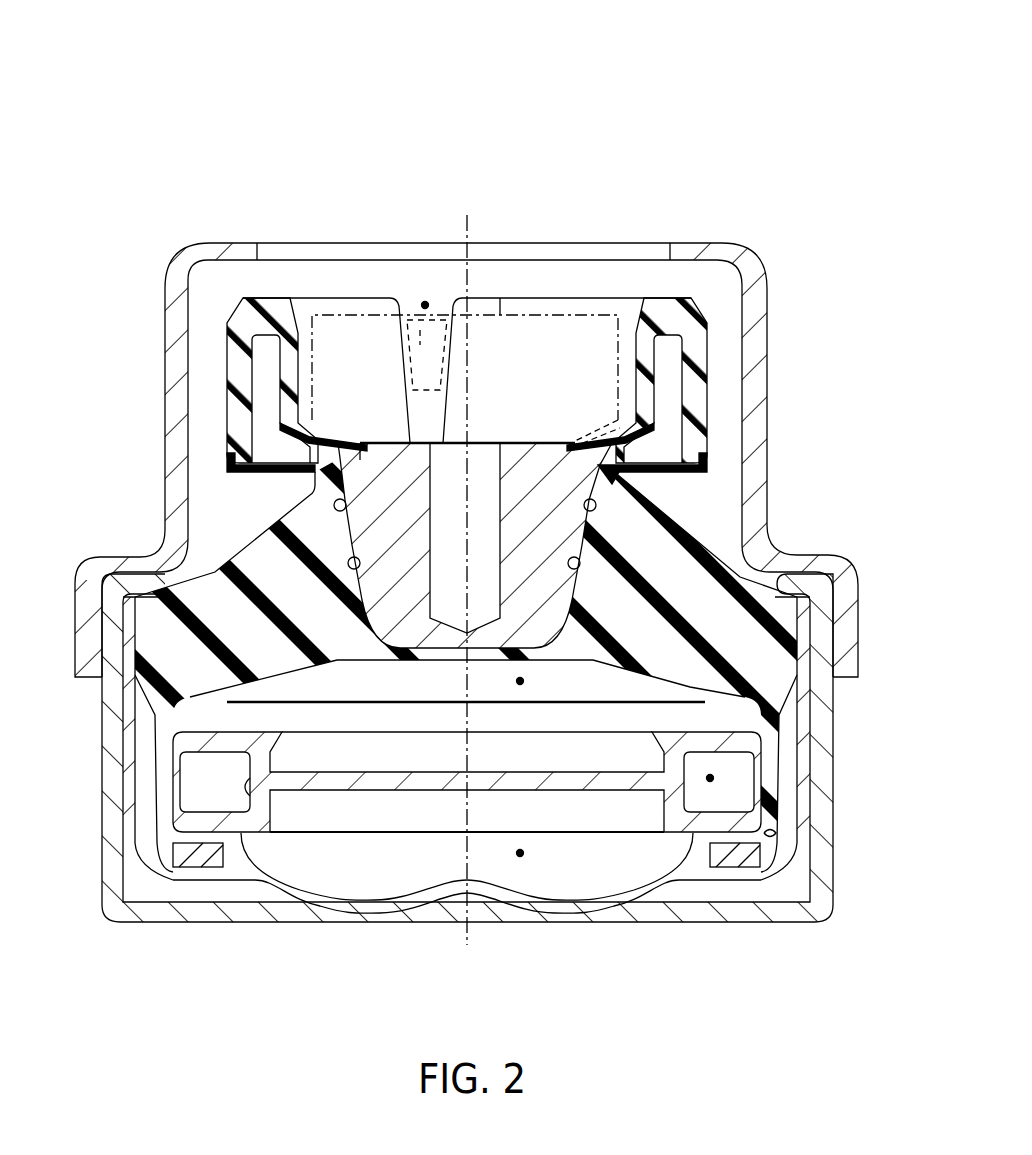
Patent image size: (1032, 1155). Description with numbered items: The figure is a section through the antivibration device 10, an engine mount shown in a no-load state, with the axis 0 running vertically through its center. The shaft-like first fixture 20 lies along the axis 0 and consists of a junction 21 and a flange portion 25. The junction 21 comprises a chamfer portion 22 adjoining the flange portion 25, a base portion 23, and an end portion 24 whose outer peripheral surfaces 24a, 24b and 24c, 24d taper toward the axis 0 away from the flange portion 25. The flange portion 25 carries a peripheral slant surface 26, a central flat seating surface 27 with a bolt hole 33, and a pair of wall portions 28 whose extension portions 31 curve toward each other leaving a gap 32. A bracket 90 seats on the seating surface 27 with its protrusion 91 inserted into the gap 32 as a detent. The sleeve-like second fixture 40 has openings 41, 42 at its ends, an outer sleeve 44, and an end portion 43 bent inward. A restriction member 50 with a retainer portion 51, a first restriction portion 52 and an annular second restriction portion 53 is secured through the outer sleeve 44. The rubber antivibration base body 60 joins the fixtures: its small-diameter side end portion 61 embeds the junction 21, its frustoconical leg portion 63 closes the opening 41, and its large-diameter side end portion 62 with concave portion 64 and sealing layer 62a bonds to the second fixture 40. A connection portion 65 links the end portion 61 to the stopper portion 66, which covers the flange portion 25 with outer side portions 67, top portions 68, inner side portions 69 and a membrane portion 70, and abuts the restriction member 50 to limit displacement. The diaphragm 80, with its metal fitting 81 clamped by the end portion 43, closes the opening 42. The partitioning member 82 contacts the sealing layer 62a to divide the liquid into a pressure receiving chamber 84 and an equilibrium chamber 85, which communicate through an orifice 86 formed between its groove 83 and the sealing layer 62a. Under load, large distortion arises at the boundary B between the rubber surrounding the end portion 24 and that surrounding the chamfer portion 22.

The antivibration device 10 is at (752, 100).
The axis O 0 is at (470, 222).
The first fixture 20 is at (598, 288).
The junction 21 is at (590, 582).
The chamfer portion 22 is at (632, 478).
The base portion 23 is at (608, 480).
The end portion 24 is at (570, 575).
The outer peripheral surface 24a is at (584, 508).
The outer peripheral surface 24b is at (568, 563).
The outer peripheral surface 24c is at (346, 508).
The outer peripheral surface 24d is at (360, 563).
The flange portion 25 is at (262, 460).
The slant surface 26 is at (325, 443).
The seating surface 27 is at (514, 441).
The wall portions 28 is at (235, 410).
The extension portions 31 is at (672, 402).
The gap 32 is at (425, 296).
The bolt hole 33 is at (478, 443).
The second fixture 40 is at (790, 742).
The opening 41 is at (815, 572).
The opening 42 is at (776, 834).
The end portion 43 is at (735, 870).
The outer sleeve 44 is at (840, 890).
The restriction member 50 is at (805, 297).
The retainer portion 51 is at (845, 640).
The first restriction portion 52 is at (752, 350).
The second restriction portion 53 is at (703, 250).
The antivibration base body 60 is at (233, 512).
The small-diameter side end portion 61 is at (307, 497).
The large-diameter side end portion 62 is at (150, 700).
The sealing layer 62a is at (147, 797).
The leg portion 63 is at (224, 567).
The concave portion 64 is at (300, 676).
The connection portion 65 is at (280, 478).
The stopper portion 66 is at (253, 291).
The outer side portions 67 is at (265, 425).
The top portions 68 is at (278, 318).
The inner side portions 69 is at (292, 383).
The membrane portion 70 is at (598, 437).
The diaphragm 80 is at (366, 895).
The metal fitting 81 is at (218, 858).
The partitioning member 82 is at (262, 750).
The groove 83 is at (266, 800).
The pressure receiving chamber 84 is at (522, 682).
The equilibrium chamber 85 is at (523, 854).
The orifice 86 is at (708, 777).
The bracket 90 is at (540, 296).
The protrusion 91 is at (417, 302).
The boundary B is at (622, 486).